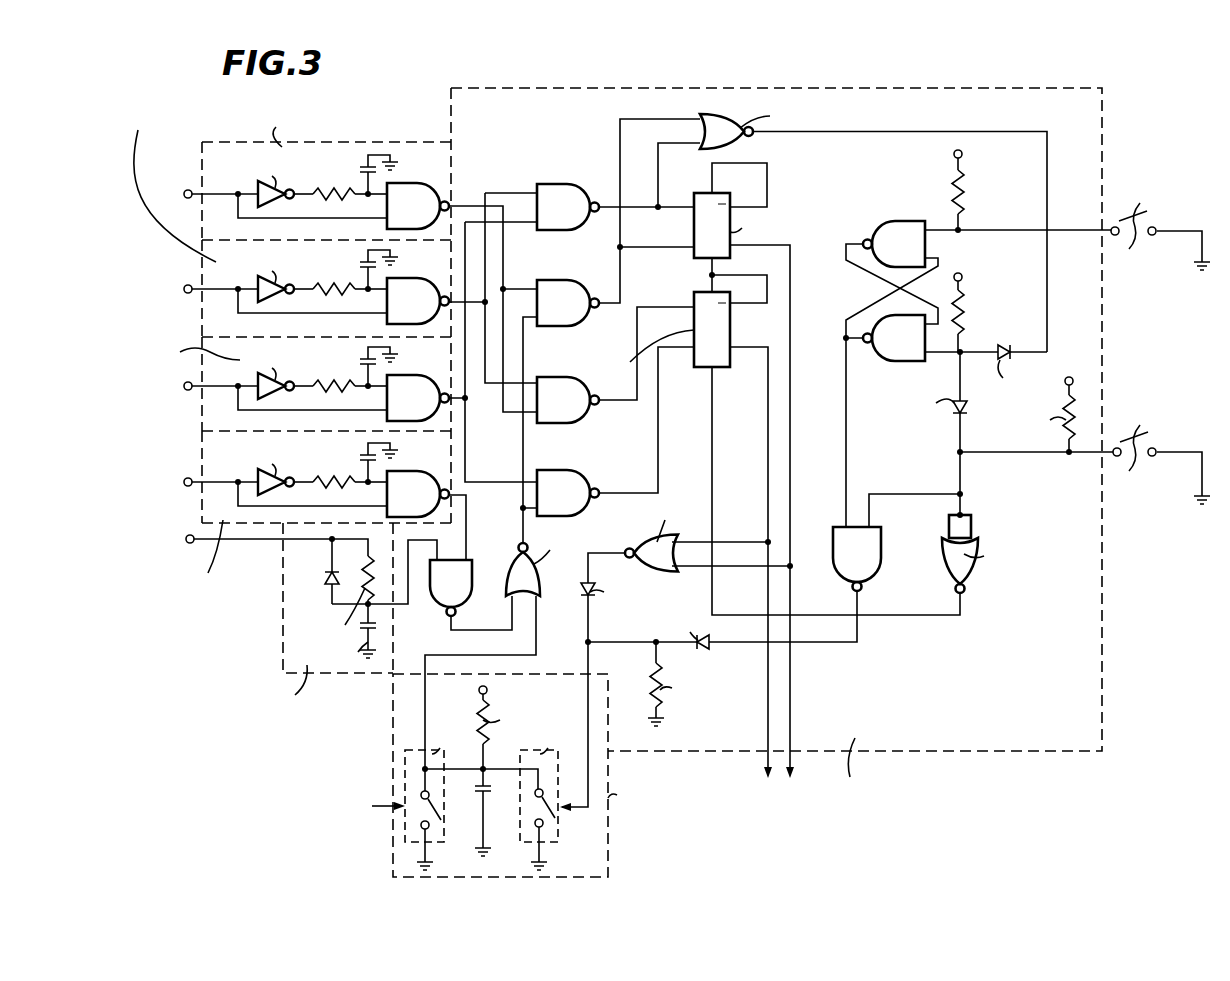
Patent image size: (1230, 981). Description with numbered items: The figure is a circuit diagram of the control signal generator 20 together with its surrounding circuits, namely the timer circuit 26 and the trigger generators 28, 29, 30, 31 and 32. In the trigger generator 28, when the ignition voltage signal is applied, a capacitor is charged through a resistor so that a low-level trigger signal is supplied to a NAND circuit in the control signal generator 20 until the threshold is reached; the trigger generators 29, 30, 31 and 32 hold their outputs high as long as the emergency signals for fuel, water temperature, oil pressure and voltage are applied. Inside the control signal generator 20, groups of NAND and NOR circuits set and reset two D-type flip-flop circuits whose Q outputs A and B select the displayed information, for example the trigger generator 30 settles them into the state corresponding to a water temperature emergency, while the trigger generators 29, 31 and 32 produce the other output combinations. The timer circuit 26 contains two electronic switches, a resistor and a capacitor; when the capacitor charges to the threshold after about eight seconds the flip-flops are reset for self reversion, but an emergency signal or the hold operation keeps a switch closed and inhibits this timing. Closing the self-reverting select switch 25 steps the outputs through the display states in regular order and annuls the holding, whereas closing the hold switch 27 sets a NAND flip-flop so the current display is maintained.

The control signal generator 20 is at (1040, 738).
The select switch 25 is at (1150, 496).
The timer circuit 26 is at (602, 827).
The hold switch 27 is at (1149, 276).
The trigger generator 28 is at (281, 648).
The trigger generator 29 is at (217, 498).
The trigger generator 30 is at (405, 150).
The trigger generator 31 is at (218, 408).
The trigger generator 32 is at (211, 273).